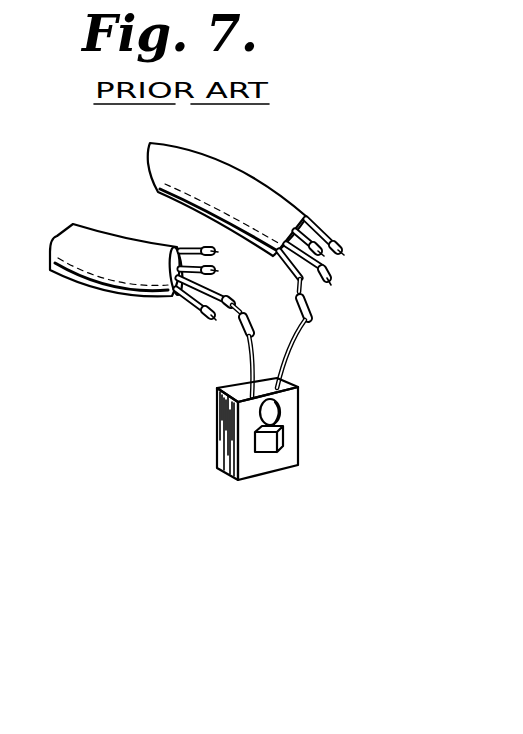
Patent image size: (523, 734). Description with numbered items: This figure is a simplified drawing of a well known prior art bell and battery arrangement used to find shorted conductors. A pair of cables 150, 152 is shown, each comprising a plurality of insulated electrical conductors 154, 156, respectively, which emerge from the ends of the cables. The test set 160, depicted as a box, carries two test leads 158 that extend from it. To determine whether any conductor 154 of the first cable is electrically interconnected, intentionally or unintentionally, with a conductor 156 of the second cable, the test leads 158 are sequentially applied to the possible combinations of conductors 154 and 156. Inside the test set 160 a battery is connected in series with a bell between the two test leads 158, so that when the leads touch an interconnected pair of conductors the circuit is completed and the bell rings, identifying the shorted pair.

The cable 150 is at (66, 271).
The cable 152 is at (252, 192).
The insulated electrical conductors 154 is at (197, 308).
The insulated electrical conductors 156 is at (333, 272).
The test leads 158 is at (286, 353).
The test set 160 is at (216, 476).